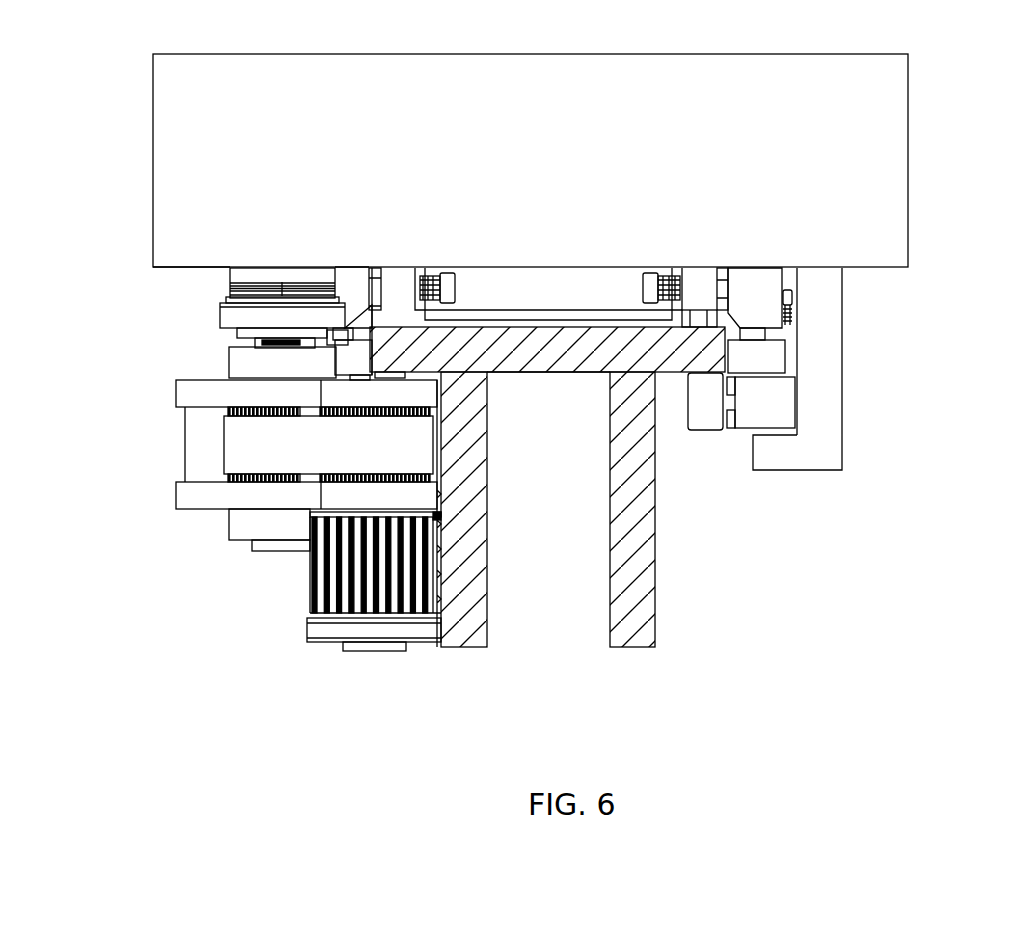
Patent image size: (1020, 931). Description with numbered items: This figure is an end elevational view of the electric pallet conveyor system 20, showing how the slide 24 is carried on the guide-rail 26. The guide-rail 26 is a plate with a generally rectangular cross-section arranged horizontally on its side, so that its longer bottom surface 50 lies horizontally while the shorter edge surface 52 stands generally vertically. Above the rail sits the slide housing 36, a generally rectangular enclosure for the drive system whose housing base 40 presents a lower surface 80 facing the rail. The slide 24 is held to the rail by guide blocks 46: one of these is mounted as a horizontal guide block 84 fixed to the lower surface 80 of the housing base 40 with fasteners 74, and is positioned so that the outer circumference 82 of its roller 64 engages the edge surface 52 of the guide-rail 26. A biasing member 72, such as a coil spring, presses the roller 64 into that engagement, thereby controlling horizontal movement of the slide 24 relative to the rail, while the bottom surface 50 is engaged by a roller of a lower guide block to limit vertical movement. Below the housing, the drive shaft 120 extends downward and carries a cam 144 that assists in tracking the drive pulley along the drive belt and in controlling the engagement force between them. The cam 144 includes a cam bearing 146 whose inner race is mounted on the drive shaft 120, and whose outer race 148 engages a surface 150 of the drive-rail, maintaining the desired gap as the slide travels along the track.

The electric pallet conveyor system 20 is at (748, 609).
The slide 24 is at (910, 118).
The guide-rail 26 is at (530, 327).
The slide housing 36 is at (176, 495).
The housing base 40 is at (204, 267).
The guide block 46 is at (773, 316).
The bottom surface 50 is at (517, 372).
The edge surface 52 is at (727, 358).
The roller 64 is at (372, 357).
The biasing member 72 is at (433, 285).
The fastener 74 is at (383, 322).
The lower surface 80 is at (168, 267).
The outer circumference 82 is at (787, 360).
The horizontal guide block 84 is at (353, 267).
The drive shaft 120 is at (378, 650).
The cam 144 is at (307, 630).
The cam bearing 146 is at (328, 645).
The outer race 148 is at (444, 624).
The surface 150 is at (441, 642).